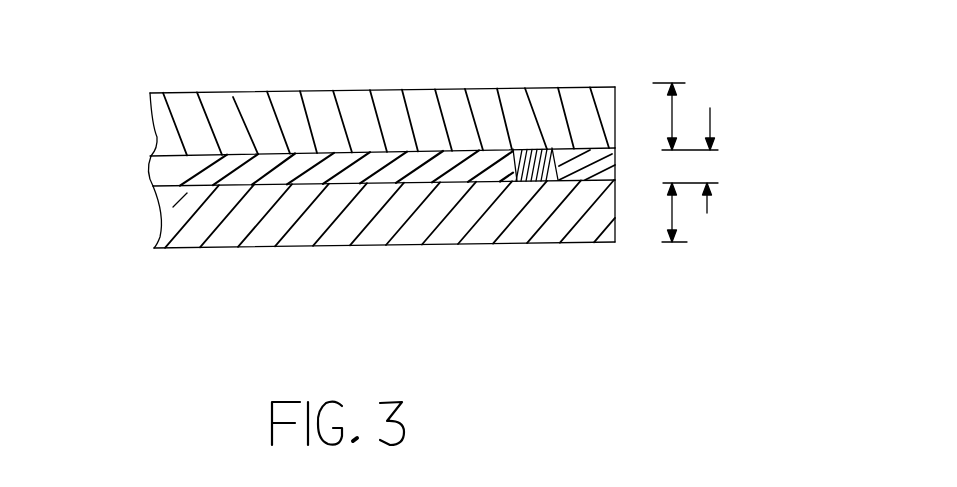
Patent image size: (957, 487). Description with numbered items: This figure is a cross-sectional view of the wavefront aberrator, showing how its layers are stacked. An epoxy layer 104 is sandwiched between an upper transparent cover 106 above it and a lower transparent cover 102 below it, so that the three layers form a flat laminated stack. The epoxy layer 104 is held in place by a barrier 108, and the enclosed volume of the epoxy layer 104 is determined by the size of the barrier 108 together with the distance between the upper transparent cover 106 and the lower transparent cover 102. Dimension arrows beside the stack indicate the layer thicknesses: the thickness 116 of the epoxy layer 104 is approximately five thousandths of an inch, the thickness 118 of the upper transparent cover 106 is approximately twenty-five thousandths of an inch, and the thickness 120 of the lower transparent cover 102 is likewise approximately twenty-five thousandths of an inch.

The lower transparent cover 102 is at (268, 230).
The epoxy layer 104 is at (157, 185).
The upper transparent cover 106 is at (288, 117).
The barrier 108 is at (527, 154).
The thickness of the epoxy layer 116 is at (710, 128).
The thickness of the upper transparent cover 118 is at (672, 117).
The thickness of the lower transparent cover 120 is at (672, 213).